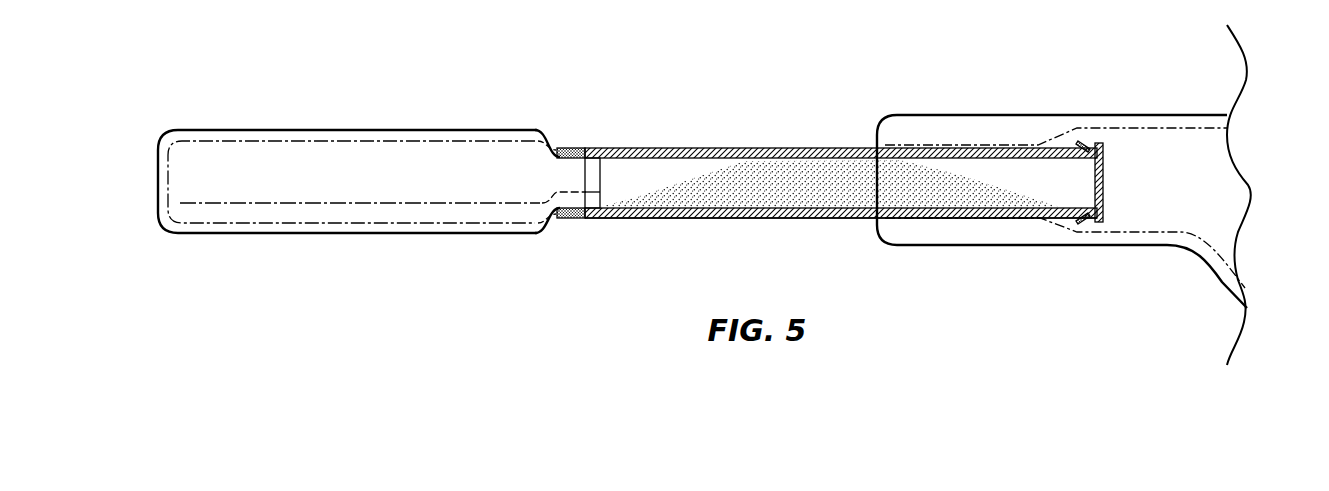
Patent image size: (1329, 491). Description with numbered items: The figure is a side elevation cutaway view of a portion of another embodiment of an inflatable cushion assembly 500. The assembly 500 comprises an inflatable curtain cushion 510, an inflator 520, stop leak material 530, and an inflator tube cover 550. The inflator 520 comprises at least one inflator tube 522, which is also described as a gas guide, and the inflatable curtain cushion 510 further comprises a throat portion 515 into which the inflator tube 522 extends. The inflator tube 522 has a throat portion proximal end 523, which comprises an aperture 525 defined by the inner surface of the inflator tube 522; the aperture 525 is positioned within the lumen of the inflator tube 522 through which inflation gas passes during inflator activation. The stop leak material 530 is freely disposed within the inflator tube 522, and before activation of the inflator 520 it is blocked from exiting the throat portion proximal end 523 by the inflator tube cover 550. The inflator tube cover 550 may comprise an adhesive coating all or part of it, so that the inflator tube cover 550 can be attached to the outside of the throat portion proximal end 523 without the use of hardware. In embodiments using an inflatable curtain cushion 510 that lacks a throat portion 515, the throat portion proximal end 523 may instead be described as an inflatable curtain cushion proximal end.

The inflatable cushion assembly 500 is at (889, 62).
The inflatable curtain cushion 510 is at (1026, 135).
The throat portion 515 is at (1200, 163).
The inflator 520 is at (422, 163).
The inflator tube 522 is at (702, 148).
The throat portion proximal end 523 is at (1054, 217).
The aperture 525 is at (1094, 182).
The stop leak material 530 is at (782, 170).
The inflator tube cover 550 is at (1104, 160).